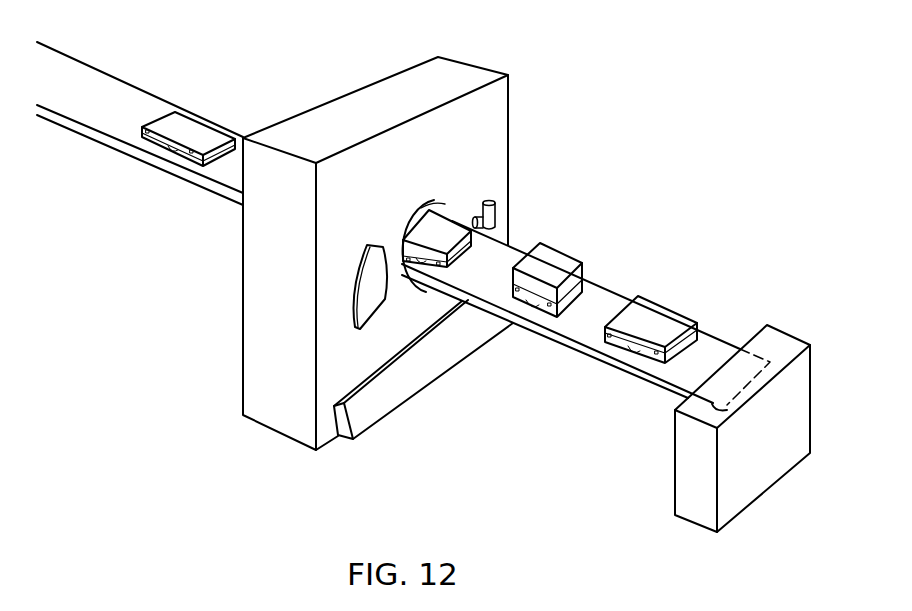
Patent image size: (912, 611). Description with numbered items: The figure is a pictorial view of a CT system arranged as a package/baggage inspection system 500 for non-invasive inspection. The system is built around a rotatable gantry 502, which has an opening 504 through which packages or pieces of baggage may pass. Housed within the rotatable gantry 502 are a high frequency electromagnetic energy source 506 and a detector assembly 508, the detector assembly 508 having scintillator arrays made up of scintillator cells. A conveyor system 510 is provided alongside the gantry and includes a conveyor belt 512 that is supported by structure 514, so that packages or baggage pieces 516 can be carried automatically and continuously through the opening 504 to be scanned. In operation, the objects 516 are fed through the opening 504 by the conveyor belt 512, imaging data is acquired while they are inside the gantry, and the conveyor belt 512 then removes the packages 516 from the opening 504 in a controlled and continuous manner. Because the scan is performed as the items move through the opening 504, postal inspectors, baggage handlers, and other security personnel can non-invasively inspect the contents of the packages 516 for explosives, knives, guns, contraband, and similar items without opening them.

The package/baggage inspection system 500 is at (692, 146).
The rotatable gantry 502 is at (500, 165).
The opening 504 is at (458, 199).
The high frequency electromagnetic energy source 506 is at (497, 217).
The detector assembly 508 is at (373, 305).
The conveyor system 510 is at (448, 240).
The conveyor belt 512 is at (212, 172).
The structure 514 is at (795, 405).
The packages or baggage pieces 516 is at (197, 130).